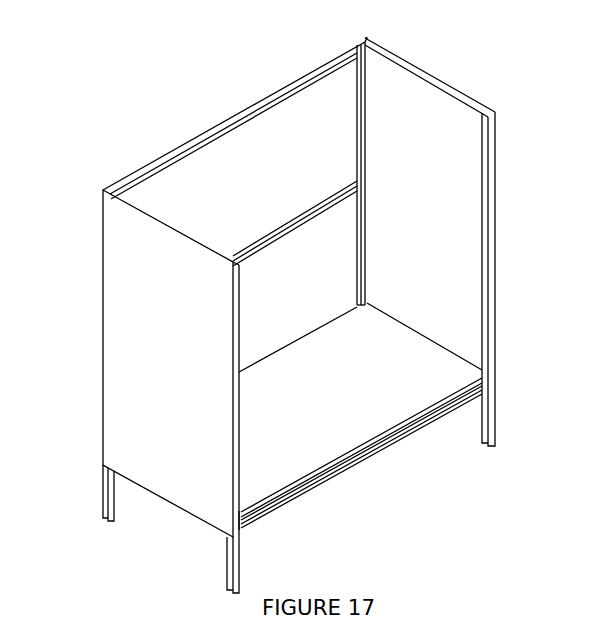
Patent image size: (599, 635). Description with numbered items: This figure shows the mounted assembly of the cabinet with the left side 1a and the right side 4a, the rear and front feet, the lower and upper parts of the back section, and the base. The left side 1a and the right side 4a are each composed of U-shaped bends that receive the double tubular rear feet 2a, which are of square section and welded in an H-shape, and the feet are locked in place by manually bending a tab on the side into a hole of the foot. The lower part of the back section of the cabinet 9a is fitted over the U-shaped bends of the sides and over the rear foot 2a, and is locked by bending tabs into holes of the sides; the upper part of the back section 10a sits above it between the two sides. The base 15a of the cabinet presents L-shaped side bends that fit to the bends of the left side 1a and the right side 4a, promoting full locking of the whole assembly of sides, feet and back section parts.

The left side 1a is at (132, 358).
The double tubular rear feet 2a is at (327, 478).
The right side 4a is at (433, 230).
The lower part of the back section of the cabinet 9a is at (252, 278).
The top rear rail 10a is at (318, 102).
The bottom shelf 15a is at (358, 403).